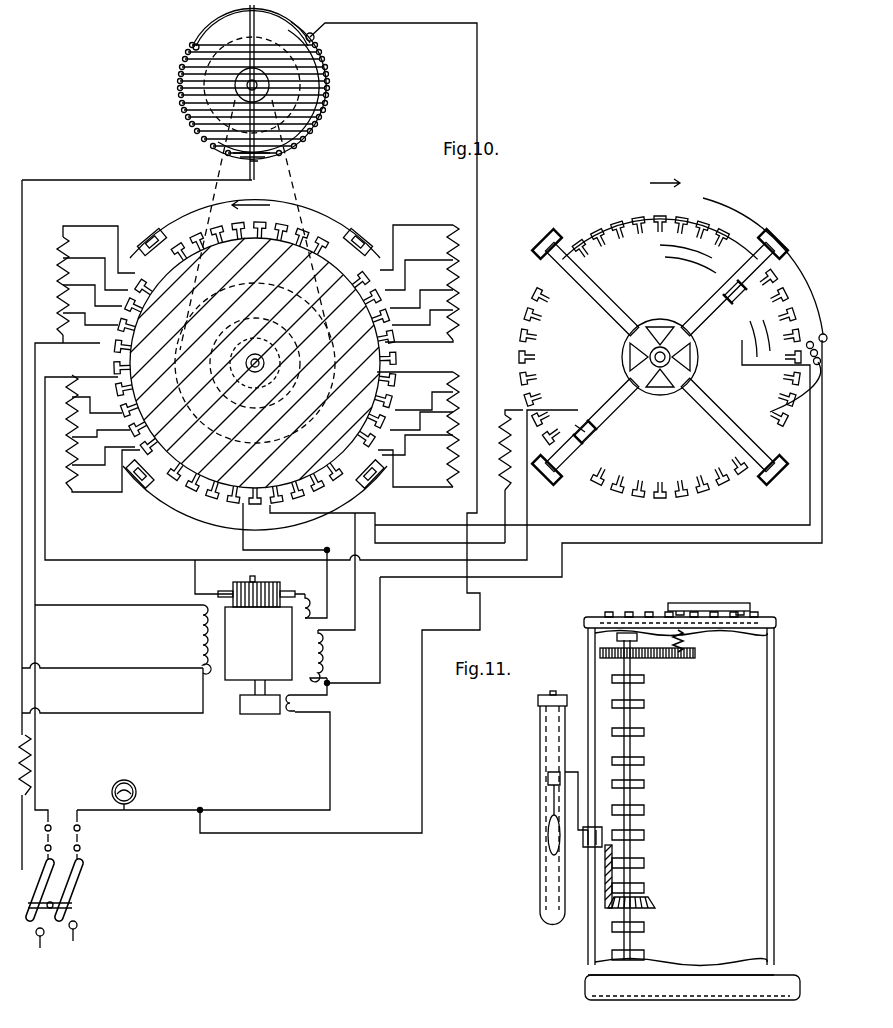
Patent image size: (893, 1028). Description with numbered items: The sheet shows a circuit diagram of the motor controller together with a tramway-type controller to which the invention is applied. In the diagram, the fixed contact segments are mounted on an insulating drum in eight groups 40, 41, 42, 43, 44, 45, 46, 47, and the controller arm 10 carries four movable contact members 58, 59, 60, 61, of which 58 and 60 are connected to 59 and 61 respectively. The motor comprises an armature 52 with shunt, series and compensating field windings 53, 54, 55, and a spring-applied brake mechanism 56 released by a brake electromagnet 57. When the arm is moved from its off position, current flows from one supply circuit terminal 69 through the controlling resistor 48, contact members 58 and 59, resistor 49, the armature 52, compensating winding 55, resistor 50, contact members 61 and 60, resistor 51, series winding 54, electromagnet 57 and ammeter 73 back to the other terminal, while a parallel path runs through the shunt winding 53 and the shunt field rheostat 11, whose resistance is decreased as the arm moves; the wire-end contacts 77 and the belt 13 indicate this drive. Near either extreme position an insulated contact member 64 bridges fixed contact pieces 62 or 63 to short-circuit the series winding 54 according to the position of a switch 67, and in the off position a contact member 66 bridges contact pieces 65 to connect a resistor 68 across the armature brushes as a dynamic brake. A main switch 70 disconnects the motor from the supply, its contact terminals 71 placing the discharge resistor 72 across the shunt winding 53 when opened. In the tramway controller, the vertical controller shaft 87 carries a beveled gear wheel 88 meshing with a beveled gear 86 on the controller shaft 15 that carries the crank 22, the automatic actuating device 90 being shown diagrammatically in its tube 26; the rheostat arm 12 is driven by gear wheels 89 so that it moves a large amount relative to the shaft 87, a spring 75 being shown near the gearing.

In FIG. 10, the controller arm 10 is at (585, 300).
In FIG. 10, the shunt field rheostat 11 is at (281, 92).
In FIG. 10, the rheostat arm 12 is at (330, 62).
In FIG. 11, the rheostat arm 12 is at (709, 600).
In FIG. 10, the belt 13 is at (297, 190).
In FIG. 11, the controller shaft 15 is at (581, 850).
In FIG. 11, the crank 22 is at (583, 790).
In FIG. 11, the float tube 26 is at (540, 737).
In FIG. 10, the contact segment group 40 is at (451, 234).
In FIG. 10, the contact segment group 41 is at (449, 230).
In FIG. 10, the contact segment group 42 is at (448, 317).
In FIG. 10, the contact segment group 43 is at (453, 399).
In FIG. 10, the contact segment group 44 is at (457, 492).
In FIG. 10, the contact segment group 45 is at (457, 489).
In FIG. 10, the contact segment group 46 is at (465, 413).
In FIG. 10, the contact segment group 47 is at (112, 335).
In FIG. 10, the controlling resistor 48 is at (58, 270).
In FIG. 10, the controlling resistor 49 is at (66, 455).
In FIG. 10, the controlling resistor 50 is at (460, 265).
In FIG. 10, the controlling resistor 51 is at (450, 438).
In FIG. 10, the armature 52 is at (256, 628).
In FIG. 10, the shunt field winding 53 is at (200, 638).
In FIG. 10, the series field winding 54 is at (330, 650).
In FIG. 10, the compensating field winding 55 is at (318, 592).
In FIG. 10, the brake mechanism 56 is at (258, 714).
In FIG. 10, the brake electromagnet 57 is at (305, 705).
In FIG. 10, the movable contact member 58 is at (140, 238).
In FIG. 10, the movable contact member 59 is at (368, 240).
In FIG. 10, the movable contact member 60 is at (380, 478).
In FIG. 10, the movable contact member 61 is at (138, 482).
In FIG. 10, the fixed contact pieces 62 is at (690, 263).
In FIG. 10, the fixed contact pieces 63 is at (763, 356).
In FIG. 10, the insulated contact member 64 is at (740, 298).
In FIG. 10, the fixed contact pieces 65 is at (592, 440).
In FIG. 10, the insulated contact member 66 is at (580, 420).
In FIG. 10, the switch 67 is at (780, 397).
In FIG. 10, the resistor 68 is at (500, 460).
In FIG. 10, the supply circuit terminals 69 is at (56, 944).
In FIG. 10, the main switch 70 is at (72, 895).
In FIG. 10, the contact terminals 71 is at (26, 880).
In FIG. 10, the discharge resistor 72 is at (28, 762).
In FIG. 10, the ammeter 73 is at (136, 795).
In FIG. 11, the spring 75 is at (683, 642).
In FIG. 10, the coil ends 77 is at (330, 116).
In FIG. 11, the beveled gear 86 is at (604, 895).
In FIG. 11, the controller shaft 87 is at (640, 758).
In FIG. 11, the beveled gear wheel 88 is at (650, 905).
In FIG. 11, the gear wheels 89 is at (648, 663).
In FIG. 11, the automatic actuating device 90 is at (532, 813).